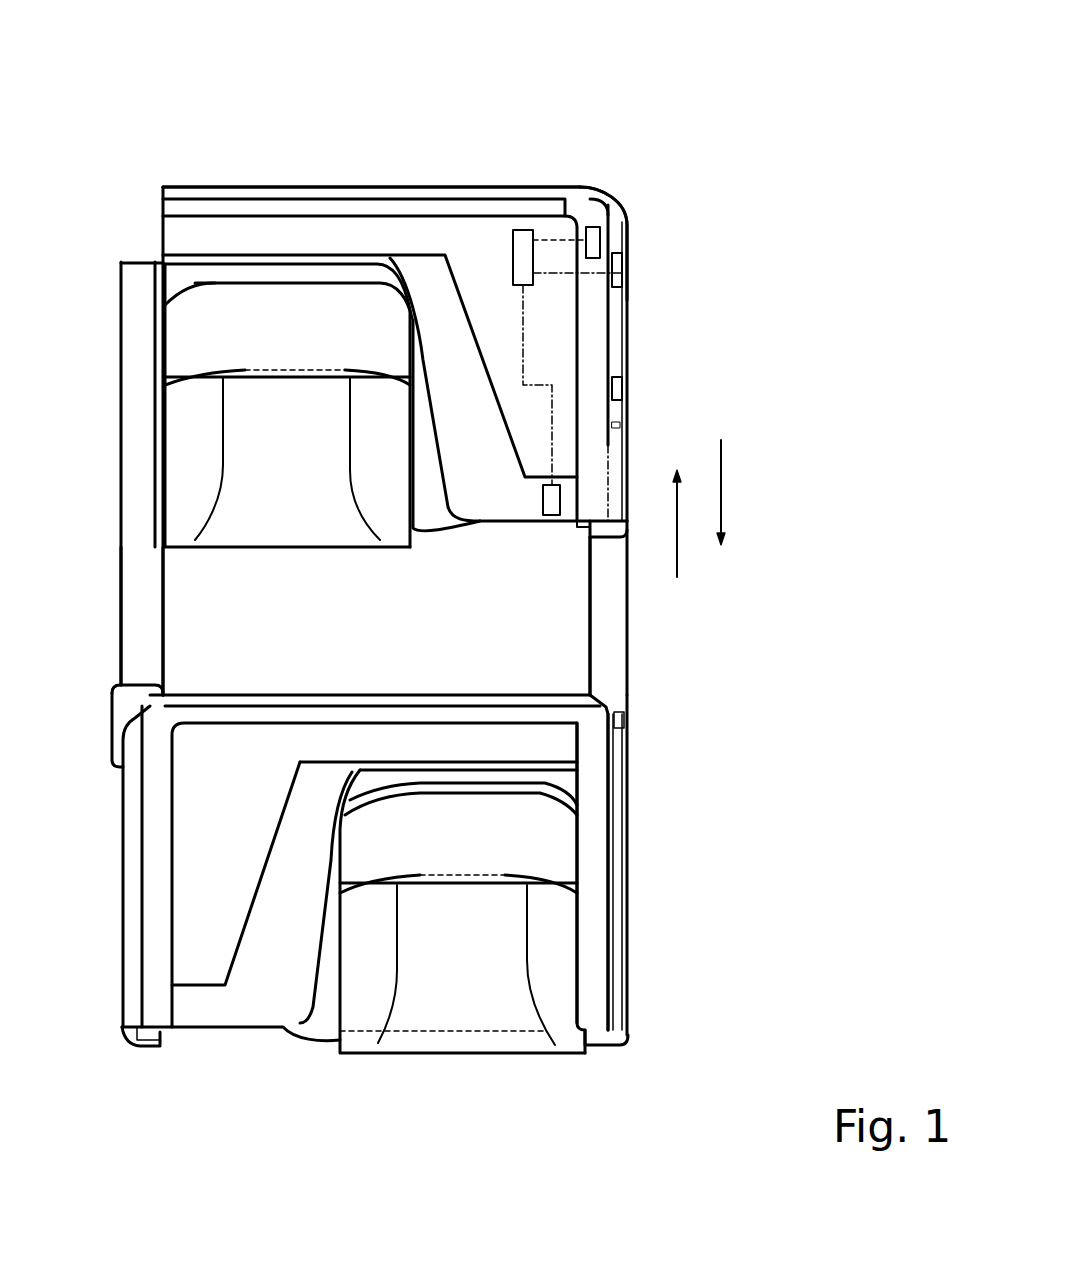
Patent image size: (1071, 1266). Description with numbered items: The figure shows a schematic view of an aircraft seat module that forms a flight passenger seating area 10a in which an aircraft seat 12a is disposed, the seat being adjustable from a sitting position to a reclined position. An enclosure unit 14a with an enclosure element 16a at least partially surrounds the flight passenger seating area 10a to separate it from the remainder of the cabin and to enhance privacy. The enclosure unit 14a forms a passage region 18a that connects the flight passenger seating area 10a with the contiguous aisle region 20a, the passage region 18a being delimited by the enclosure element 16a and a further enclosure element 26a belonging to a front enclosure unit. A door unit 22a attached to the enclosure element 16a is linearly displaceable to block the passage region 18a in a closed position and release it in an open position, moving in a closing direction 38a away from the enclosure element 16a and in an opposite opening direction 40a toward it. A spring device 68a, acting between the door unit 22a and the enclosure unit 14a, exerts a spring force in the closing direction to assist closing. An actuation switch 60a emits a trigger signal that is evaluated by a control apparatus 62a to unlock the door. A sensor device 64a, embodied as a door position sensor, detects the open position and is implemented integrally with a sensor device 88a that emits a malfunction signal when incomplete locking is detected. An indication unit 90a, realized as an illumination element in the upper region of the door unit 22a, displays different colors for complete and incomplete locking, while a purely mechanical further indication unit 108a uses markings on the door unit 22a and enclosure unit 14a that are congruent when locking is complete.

The flight passenger seating area 10a is at (217, 702).
The aircraft seat 12a is at (282, 440).
The enclosure unit 14a is at (652, 150).
The enclosure element 16a is at (615, 327).
The passage region 18a is at (672, 657).
The aisle region 20a is at (678, 770).
The door unit 22a is at (613, 598).
The further enclosure element 26a is at (593, 860).
The closing direction 38a is at (721, 488).
The opening direction 40a is at (678, 565).
The actuation switch 60a is at (550, 500).
The control apparatus 62a is at (525, 253).
The sensor device 64a is at (593, 240).
The spring device 68a is at (653, 236).
The sensor device 88a is at (609, 187).
The indication unit 90a is at (627, 268).
The further indication unit 108a is at (615, 390).